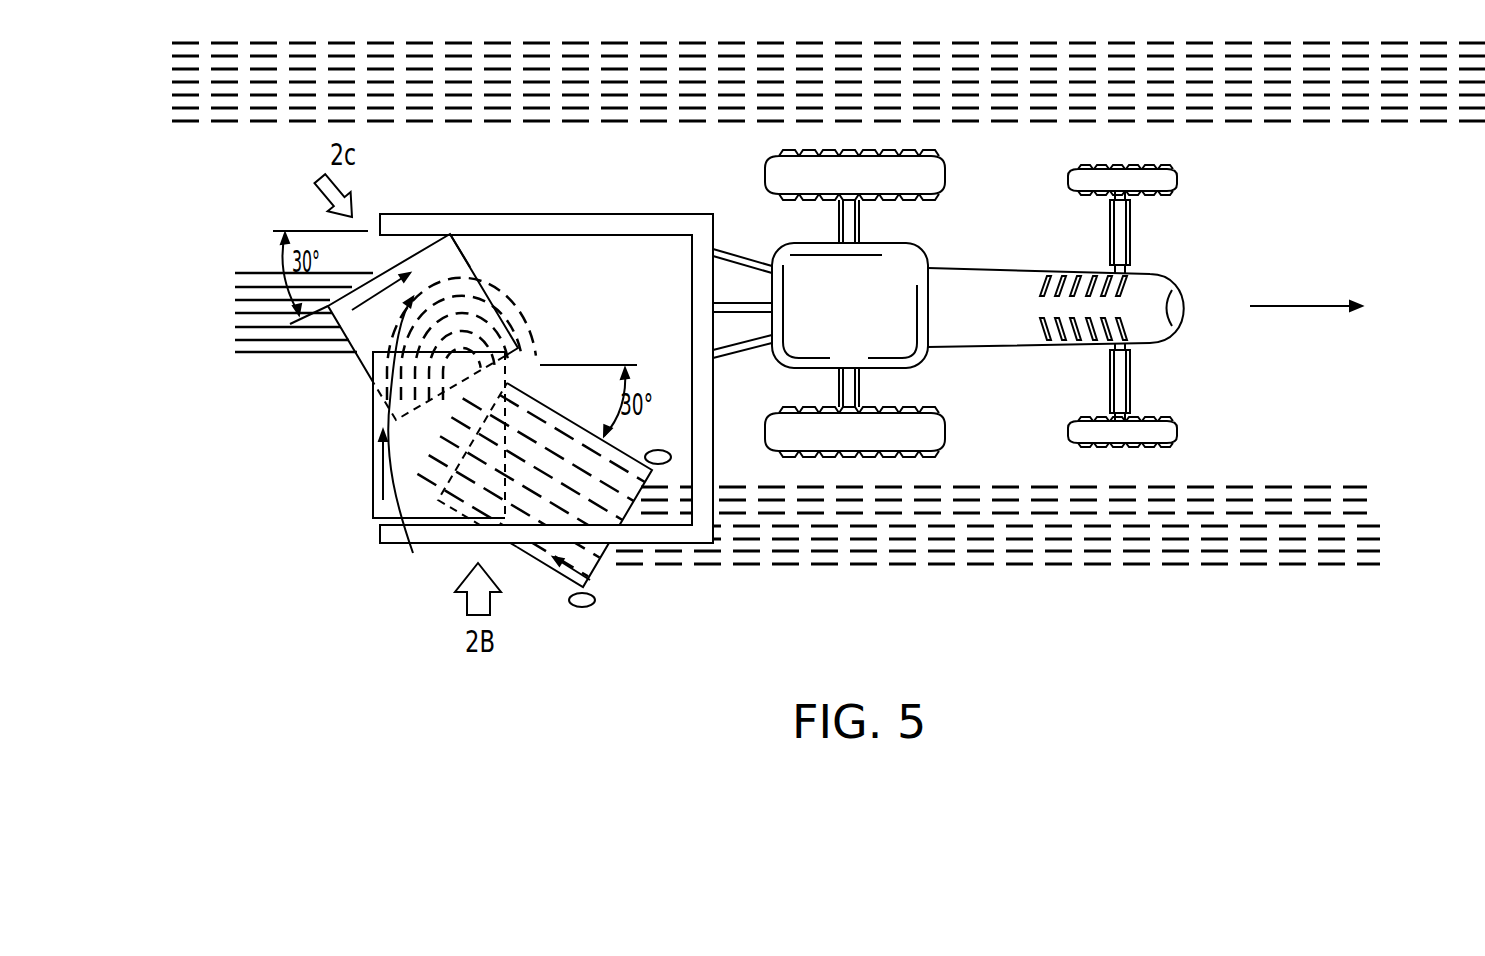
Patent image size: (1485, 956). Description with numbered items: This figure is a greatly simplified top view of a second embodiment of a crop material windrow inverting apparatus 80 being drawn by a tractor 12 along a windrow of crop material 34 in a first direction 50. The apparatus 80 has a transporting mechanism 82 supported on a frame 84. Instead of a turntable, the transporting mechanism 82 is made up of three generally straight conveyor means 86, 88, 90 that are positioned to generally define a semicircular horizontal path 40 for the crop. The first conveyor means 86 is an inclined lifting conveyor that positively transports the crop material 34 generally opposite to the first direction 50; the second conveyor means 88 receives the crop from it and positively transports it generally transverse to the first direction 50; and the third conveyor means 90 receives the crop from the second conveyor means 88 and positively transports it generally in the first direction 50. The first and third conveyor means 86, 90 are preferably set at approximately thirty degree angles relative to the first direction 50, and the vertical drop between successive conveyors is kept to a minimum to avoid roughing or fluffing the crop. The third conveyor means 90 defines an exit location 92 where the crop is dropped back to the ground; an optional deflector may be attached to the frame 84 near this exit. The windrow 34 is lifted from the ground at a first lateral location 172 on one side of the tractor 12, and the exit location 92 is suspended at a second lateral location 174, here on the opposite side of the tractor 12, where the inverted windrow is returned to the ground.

The tractor 12 is at (978, 283).
The crop material 34 is at (764, 410).
The semicircular horizontal path 40 is at (399, 447).
The first direction 50 is at (1297, 306).
The apparatus 80 is at (465, 419).
The transporting mechanism 82 is at (370, 498).
The frame 84 is at (667, 536).
The first conveyor means 86 is at (547, 565).
The second conveyor means 88 is at (373, 420).
The third conveyor means 90 is at (443, 266).
The exit location 92 is at (480, 237).
The first lateral location 172 is at (1033, 553).
The second lateral location 174 is at (268, 352).